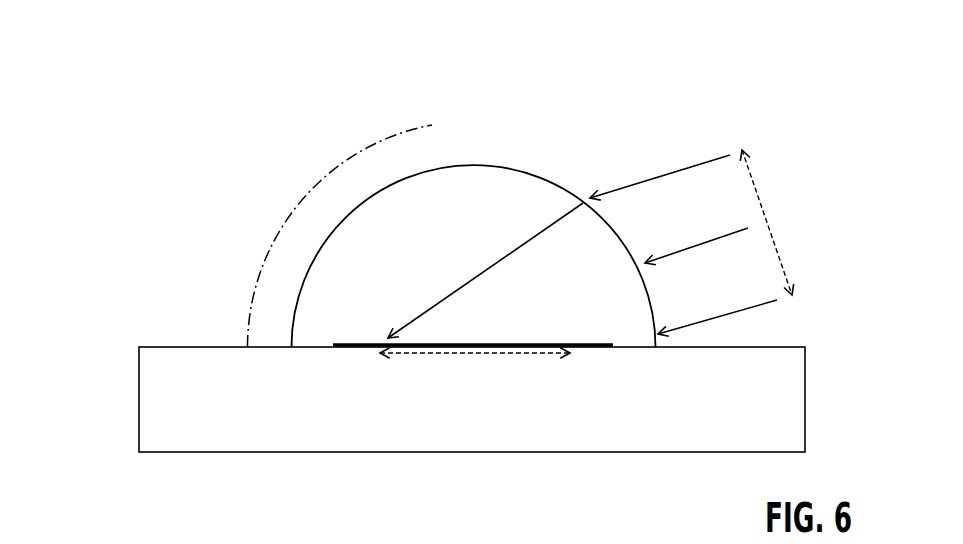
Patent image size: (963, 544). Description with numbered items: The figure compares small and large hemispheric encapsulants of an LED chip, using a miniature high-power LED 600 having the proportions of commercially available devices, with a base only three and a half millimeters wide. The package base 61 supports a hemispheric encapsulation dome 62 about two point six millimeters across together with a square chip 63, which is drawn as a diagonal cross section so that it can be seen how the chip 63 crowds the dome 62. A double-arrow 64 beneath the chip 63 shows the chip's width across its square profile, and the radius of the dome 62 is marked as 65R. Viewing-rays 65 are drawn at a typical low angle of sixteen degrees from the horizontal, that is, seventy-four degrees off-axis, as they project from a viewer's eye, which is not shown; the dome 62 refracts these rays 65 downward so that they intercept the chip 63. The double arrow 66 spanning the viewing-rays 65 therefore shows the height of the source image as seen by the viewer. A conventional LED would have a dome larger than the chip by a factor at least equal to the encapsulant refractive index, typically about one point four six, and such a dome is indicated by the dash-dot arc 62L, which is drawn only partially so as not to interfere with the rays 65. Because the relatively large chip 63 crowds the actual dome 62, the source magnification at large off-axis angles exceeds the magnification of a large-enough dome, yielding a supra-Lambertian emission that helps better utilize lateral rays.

The optical element assembly 600 is at (175, 138).
The package base 61 is at (157, 376).
The hemispheric encapsulation dome 62 is at (385, 182).
The dash-dot arc 62L is at (248, 304).
The square chip 63 is at (343, 352).
The double-arrow 64 is at (435, 359).
The viewing-rays 65 is at (633, 180).
The lens radius 65R is at (515, 243).
The double arrow 66 is at (767, 222).